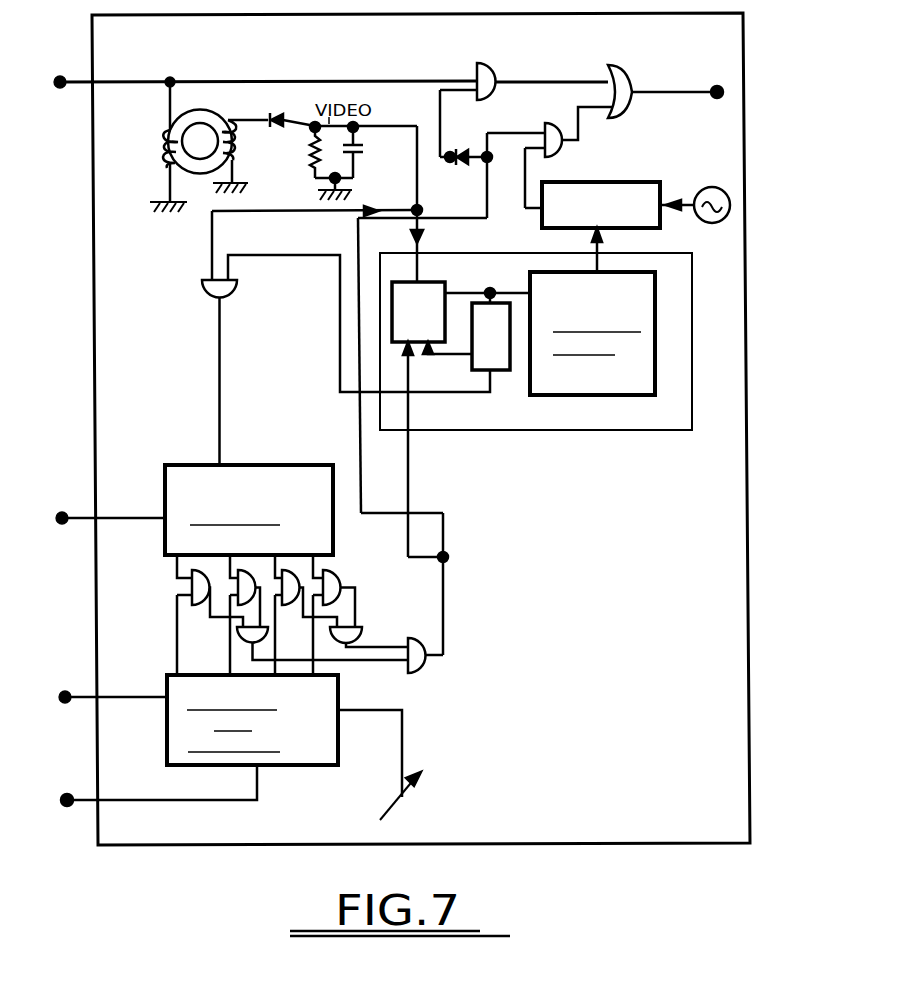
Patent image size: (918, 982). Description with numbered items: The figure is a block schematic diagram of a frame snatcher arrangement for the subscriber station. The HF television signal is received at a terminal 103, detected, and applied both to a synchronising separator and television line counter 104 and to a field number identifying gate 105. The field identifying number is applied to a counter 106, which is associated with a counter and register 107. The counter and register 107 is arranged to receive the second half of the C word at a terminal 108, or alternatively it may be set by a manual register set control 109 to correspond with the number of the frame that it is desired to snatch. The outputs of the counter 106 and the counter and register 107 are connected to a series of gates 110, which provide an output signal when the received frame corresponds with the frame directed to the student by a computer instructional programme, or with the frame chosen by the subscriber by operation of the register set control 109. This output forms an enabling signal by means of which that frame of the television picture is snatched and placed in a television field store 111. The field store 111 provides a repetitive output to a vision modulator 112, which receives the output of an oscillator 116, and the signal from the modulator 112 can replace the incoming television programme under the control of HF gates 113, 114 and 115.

The terminal 103 is at (60, 77).
The synchronising separator and television line counter 104 is at (490, 350).
The field number identifying gate 105 is at (206, 283).
The counter 106 is at (300, 485).
The counter and register 107 is at (166, 673).
The terminal 108 is at (67, 793).
The manual register set control 109 is at (397, 795).
The series of gates 110 is at (392, 604).
The television field store 111 is at (638, 337).
The vision modulator 112 is at (637, 190).
The HF gate 113 is at (477, 66).
The HF gate 114 is at (615, 68).
The HF gate 115 is at (546, 126).
The oscillator 116 is at (703, 189).